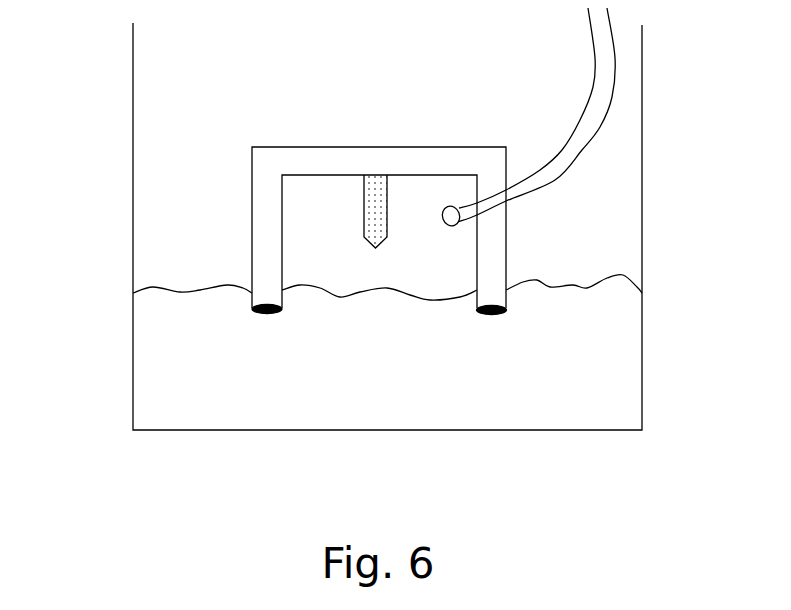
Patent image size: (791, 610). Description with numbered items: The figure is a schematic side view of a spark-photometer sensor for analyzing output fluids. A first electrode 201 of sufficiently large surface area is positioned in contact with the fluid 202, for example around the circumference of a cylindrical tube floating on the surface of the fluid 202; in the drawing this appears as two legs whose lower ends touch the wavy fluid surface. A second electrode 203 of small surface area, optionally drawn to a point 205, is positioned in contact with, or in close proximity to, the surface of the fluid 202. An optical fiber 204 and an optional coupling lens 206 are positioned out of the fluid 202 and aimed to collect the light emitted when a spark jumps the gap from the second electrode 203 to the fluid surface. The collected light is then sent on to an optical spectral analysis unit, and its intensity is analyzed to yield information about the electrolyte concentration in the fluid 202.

The first electrode 201 is at (272, 313).
The fluid 202 is at (165, 347).
The second electrode 203 is at (375, 200).
The optical fiber 204 is at (602, 58).
The point 205 is at (373, 250).
The coupling lens 206 is at (478, 209).